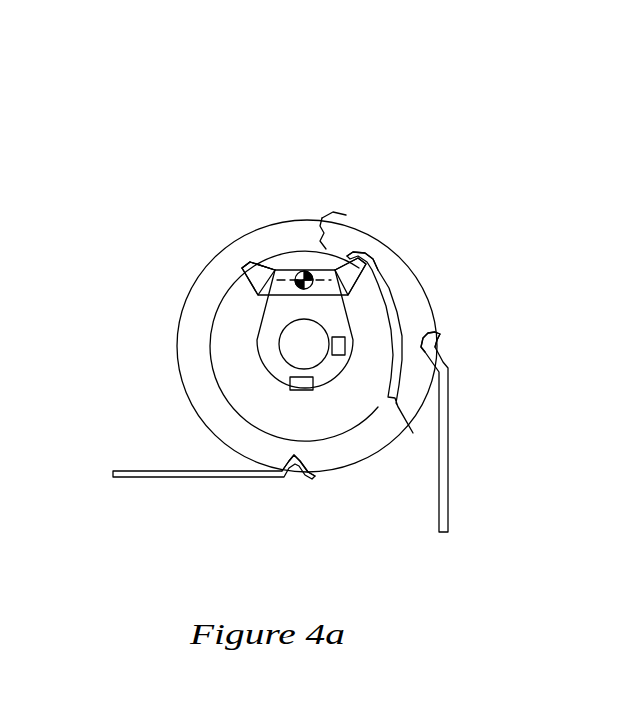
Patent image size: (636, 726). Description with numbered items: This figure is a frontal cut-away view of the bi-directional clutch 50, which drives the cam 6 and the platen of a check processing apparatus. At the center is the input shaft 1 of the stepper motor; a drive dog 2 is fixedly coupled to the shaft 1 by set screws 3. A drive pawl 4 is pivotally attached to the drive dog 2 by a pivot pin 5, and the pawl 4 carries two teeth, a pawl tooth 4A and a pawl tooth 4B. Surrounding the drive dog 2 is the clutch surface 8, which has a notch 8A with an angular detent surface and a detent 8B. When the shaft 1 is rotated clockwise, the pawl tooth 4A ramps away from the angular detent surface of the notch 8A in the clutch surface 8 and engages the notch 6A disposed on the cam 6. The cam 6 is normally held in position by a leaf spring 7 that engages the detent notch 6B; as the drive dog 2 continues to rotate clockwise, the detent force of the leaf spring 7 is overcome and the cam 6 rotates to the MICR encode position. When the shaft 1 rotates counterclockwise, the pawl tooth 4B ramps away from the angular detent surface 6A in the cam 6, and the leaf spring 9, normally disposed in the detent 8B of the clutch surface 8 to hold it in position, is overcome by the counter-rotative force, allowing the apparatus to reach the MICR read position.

The bi-directional clutch 50 is at (433, 143).
The input shaft 1 is at (278, 362).
The drive dog 2 is at (252, 327).
The set screws 3 is at (348, 354).
The drive pawl 4 is at (294, 265).
The pawl tooth 4A is at (273, 262).
The pawl tooth 4B is at (358, 292).
The pivot pin 5 is at (313, 277).
The cam 6 is at (417, 278).
The notch 6A is at (373, 247).
The detent notch 6B is at (418, 336).
The leaf spring 7 is at (451, 418).
The clutch surface 8 is at (193, 270).
The notch 8A is at (237, 258).
The detent 8B is at (283, 462).
The leaf spring 9 is at (252, 478).